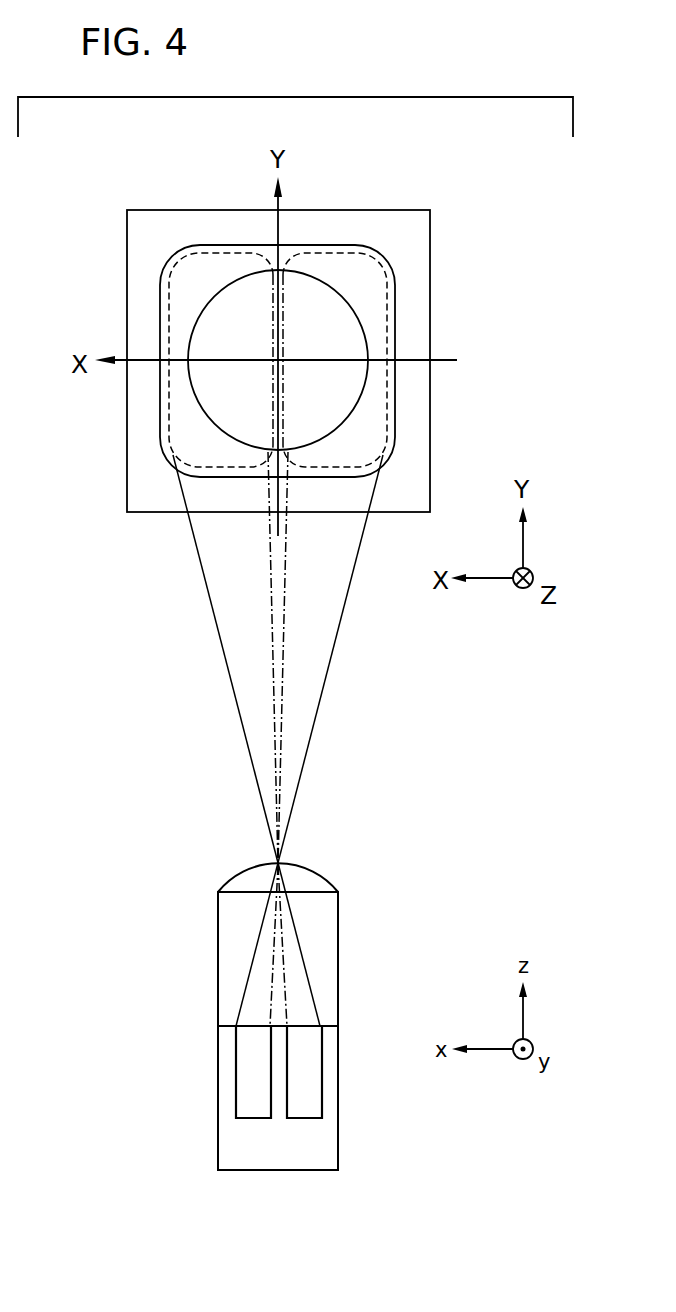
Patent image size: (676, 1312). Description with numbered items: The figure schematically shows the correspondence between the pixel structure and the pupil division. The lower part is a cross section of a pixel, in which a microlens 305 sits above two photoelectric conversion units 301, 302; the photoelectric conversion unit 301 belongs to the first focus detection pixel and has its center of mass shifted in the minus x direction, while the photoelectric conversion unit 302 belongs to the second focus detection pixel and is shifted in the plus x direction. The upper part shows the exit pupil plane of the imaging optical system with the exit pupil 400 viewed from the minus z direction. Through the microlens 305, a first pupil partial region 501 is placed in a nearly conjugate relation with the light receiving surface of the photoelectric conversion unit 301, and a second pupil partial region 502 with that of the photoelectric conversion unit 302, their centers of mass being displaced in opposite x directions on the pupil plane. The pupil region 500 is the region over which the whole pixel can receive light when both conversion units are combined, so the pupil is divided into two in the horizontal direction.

The pupil region 500 is at (230, 245).
The exit pupil 400 is at (358, 323).
The first pupil partial region 501 is at (227, 391).
The second pupil partial region 502 is at (339, 389).
The microlens 305 is at (305, 878).
The photoelectric conversion unit 301 is at (307, 1091).
The photoelectric conversion unit 302 is at (252, 1091).